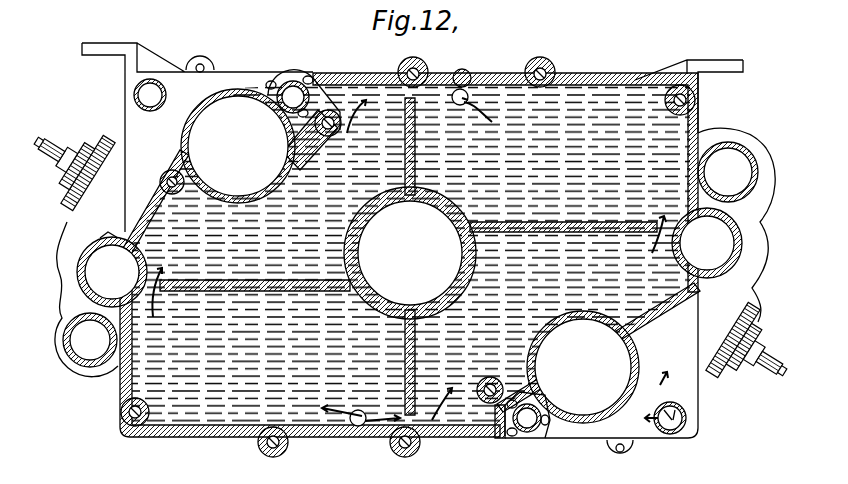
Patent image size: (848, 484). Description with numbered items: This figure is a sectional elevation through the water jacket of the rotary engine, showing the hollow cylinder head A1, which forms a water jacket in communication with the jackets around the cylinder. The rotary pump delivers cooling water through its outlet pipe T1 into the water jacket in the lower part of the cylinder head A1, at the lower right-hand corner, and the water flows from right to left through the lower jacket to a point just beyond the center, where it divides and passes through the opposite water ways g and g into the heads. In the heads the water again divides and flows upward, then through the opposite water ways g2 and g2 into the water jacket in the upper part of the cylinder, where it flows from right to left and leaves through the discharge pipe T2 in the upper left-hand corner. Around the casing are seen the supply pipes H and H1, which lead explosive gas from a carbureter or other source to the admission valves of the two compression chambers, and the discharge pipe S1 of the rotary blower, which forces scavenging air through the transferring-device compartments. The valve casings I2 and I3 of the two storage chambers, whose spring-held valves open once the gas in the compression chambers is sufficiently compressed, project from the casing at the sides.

The cylinder head A1 is at (495, 90).
The discharge pipe T2 is at (148, 95).
The outlet pipe T1 is at (682, 430).
The discharge pipe S1 is at (293, 92).
The supply pipe H is at (725, 153).
The supply pipe H1 is at (85, 350).
The water way g2 is at (460, 92).
The water way g is at (358, 428).
The valve casing I2 is at (758, 340).
The valve casing I3 is at (95, 177).